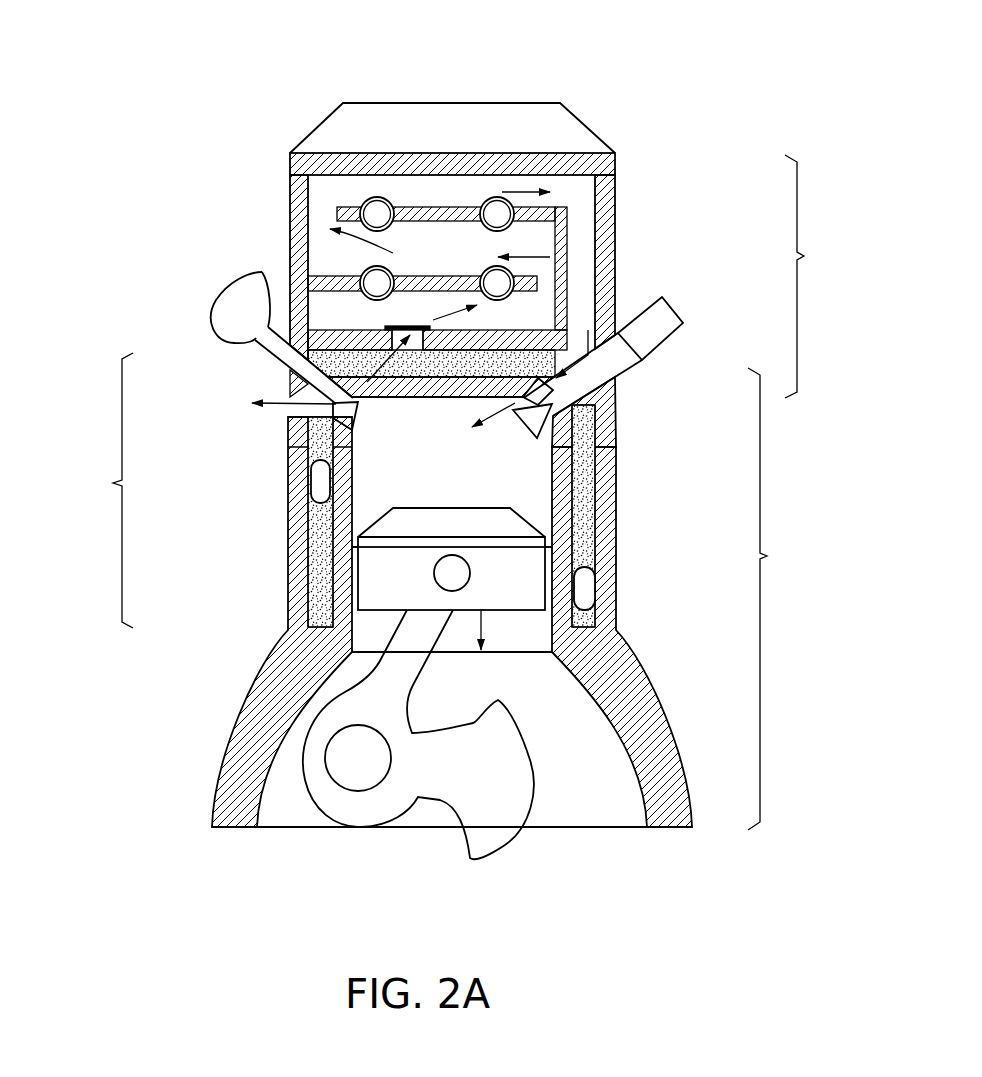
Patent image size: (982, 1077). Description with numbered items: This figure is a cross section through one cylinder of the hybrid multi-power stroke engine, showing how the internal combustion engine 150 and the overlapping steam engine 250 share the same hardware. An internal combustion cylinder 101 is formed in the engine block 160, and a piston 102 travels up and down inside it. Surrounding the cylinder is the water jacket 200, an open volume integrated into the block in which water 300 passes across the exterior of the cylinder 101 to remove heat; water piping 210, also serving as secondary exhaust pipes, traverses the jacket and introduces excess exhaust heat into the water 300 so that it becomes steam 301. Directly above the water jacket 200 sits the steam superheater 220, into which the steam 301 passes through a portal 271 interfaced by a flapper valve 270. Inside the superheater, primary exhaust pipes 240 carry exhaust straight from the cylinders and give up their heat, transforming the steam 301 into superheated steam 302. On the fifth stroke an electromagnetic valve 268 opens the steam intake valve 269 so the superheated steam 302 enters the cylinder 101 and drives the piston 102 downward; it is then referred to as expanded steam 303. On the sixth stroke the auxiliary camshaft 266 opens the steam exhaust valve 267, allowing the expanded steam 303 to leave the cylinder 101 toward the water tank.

The internal combustion cylinder 101 is at (537, 485).
The piston 102 is at (370, 572).
The internal combustion engine 150 is at (786, 599).
The engine block 160 is at (617, 655).
The water jacket 200 is at (93, 490).
The water piping 210 is at (320, 480).
The steam superheater 220 is at (290, 193).
The primary exhaust pipes 240 is at (378, 198).
The steam engine 250 is at (822, 276).
The auxiliary camshaft 266 is at (233, 298).
The steam exhaust valve 267 is at (332, 401).
The electromagnetic valve 268 is at (668, 318).
The steam intake valve 269 is at (542, 418).
The flapper valve 270 is at (418, 335).
The portal 271 is at (400, 343).
The water 300 is at (315, 545).
The steam 301 is at (380, 376).
The superheated steam 302 is at (580, 328).
The expanded steam 303 is at (292, 408).